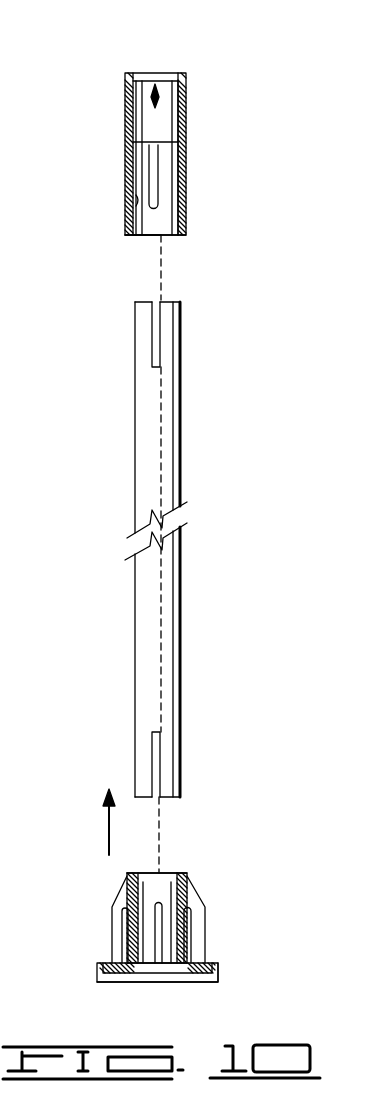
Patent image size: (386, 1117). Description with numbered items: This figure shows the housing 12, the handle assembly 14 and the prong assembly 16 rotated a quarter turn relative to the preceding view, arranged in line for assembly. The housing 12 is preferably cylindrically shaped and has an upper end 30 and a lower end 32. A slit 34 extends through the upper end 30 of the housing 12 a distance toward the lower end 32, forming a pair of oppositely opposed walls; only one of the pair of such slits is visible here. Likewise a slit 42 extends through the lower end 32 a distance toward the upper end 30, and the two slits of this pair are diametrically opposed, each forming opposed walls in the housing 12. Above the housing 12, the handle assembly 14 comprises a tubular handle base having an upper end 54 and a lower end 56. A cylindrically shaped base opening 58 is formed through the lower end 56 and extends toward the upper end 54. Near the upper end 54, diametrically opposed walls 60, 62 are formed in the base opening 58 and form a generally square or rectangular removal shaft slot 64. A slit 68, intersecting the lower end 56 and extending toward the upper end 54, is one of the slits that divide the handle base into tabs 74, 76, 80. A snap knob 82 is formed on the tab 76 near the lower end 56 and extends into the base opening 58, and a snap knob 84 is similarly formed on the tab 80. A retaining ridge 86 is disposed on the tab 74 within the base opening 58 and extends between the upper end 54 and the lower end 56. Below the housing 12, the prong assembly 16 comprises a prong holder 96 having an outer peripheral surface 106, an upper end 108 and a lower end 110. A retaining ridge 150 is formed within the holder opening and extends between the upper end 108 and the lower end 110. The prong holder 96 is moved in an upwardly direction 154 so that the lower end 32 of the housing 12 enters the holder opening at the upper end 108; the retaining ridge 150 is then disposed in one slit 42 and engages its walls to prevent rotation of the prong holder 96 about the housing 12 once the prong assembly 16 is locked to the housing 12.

The housing 12 is at (184, 636).
The handle assembly 14 is at (122, 149).
The prong assembly 16 is at (108, 911).
The upper end 30 is at (172, 302).
The lower end 32 is at (170, 798).
The slit 34 is at (160, 340).
The slit 42 is at (158, 765).
The upper end 54 is at (186, 75).
The lower end 56 is at (186, 236).
The base opening 58 is at (136, 178).
The wall 60 is at (140, 73).
The wall 62 is at (165, 81).
The removal shaft slot 64 is at (156, 84).
The slit 68 is at (136, 201).
The tab 74 is at (145, 240).
The tab 76 is at (128, 233).
The tab 80 is at (186, 200).
The snap knob 82 is at (136, 240).
The snap knob 84 is at (157, 236).
The retaining ridge 86 is at (183, 142).
The prong holder 96 is at (112, 938).
The outer peripheral surface 106 is at (100, 973).
The upper end 108 is at (186, 873).
The lower end 110 is at (217, 981).
The retaining ridge 150 is at (162, 918).
The upwardly direction 154 is at (107, 830).